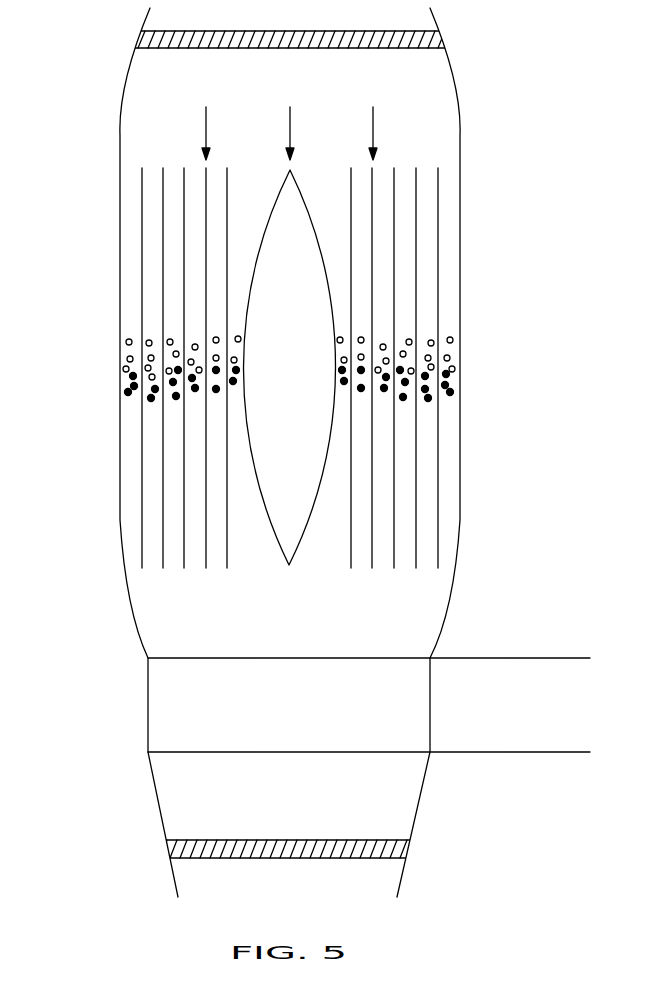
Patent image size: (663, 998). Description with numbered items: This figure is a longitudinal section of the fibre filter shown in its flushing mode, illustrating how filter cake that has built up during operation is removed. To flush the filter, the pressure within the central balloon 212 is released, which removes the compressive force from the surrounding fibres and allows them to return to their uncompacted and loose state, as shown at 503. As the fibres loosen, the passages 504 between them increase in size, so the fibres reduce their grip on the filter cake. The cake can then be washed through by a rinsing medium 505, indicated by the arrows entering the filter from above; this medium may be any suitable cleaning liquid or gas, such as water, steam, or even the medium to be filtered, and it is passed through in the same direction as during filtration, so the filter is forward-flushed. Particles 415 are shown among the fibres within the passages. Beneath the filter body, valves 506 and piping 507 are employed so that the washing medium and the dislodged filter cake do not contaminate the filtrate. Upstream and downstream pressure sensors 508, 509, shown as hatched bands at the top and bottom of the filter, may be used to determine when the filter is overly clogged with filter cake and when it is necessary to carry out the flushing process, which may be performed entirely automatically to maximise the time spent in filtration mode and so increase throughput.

The upstream pressure sensor 508 is at (140, 42).
The rinsing medium 505 is at (289, 121).
The balloon 212 is at (291, 171).
The passages 504 is at (220, 240).
The particles 415 is at (175, 400).
The fibres in uncompacted and loose state 503 is at (394, 489).
The valves 506 is at (160, 705).
The piping 507 is at (517, 738).
The downstream pressure sensor 509 is at (170, 852).